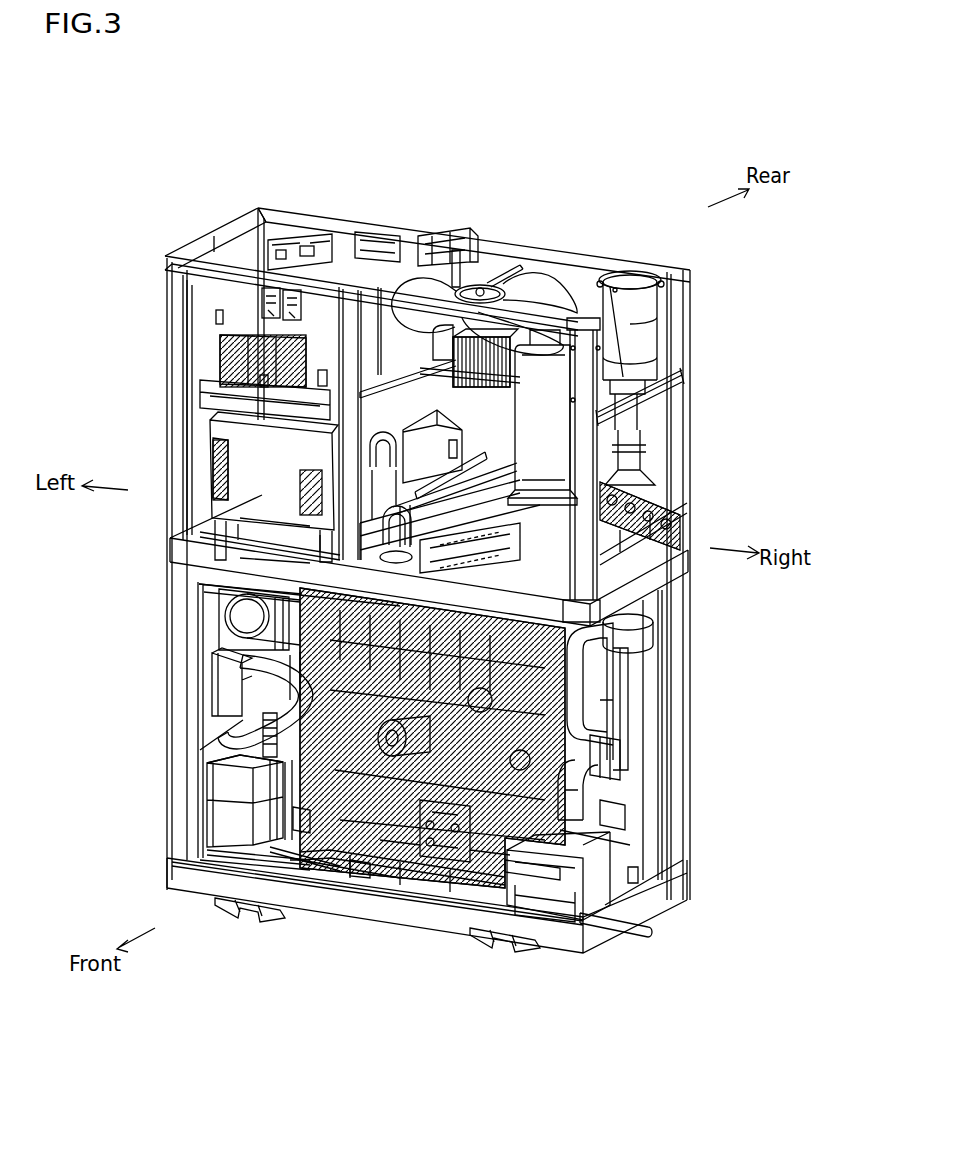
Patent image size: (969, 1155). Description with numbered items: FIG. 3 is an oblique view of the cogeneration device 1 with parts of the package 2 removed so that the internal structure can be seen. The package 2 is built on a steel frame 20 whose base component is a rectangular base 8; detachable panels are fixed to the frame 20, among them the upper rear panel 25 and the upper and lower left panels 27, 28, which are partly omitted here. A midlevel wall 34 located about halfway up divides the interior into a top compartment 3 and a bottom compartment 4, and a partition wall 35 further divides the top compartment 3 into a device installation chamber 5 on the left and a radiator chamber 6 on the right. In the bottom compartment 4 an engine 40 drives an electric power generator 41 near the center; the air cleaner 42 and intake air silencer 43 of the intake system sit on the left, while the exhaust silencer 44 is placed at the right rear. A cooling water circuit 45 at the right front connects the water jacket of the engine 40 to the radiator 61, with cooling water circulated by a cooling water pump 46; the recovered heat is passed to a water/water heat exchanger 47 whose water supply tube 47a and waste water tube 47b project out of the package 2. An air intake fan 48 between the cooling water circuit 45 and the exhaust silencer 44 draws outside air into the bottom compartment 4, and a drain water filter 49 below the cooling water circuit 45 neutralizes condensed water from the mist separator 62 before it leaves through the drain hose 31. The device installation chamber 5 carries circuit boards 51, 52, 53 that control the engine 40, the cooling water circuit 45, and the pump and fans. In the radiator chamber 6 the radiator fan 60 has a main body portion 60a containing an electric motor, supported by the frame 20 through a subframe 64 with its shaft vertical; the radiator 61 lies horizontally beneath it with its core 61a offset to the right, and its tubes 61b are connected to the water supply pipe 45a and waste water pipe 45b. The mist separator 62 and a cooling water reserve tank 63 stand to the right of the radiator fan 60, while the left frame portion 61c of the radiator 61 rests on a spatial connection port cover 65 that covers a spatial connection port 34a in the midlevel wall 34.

The engine generator unit 1 is at (588, 122).
The package 2 is at (185, 243).
The top compartment 3 is at (419, 202).
The bottom compartment 4 is at (212, 736).
The device installation chamber 5 is at (373, 240).
The radiator chamber 6 is at (483, 247).
The rectangular base 8 is at (315, 903).
The frame 20 is at (175, 368).
The upper rear panel 25 is at (590, 258).
The upper left panel 27 is at (216, 240).
The lower left panel 28 is at (215, 752).
The drain hose 31 is at (638, 937).
The midlevel wall 34 is at (232, 552).
The spatial connection port 34a is at (478, 566).
The partition wall 35 is at (372, 300).
The engine 40 is at (433, 803).
The electric power generator 41 is at (292, 770).
The air cleaner 42 is at (248, 620).
The intake air silencer 43 is at (230, 678).
The exhaust silencer 44 is at (650, 615).
The cooling water circuit 45 is at (620, 718).
The water supply pipe 45a is at (440, 438).
The waste water pipe 45b is at (217, 528).
The cooling water pump 46 is at (523, 878).
The water/water heat exchanger 47 is at (610, 667).
The water supply tube 47a is at (620, 745).
The waste water tube 47b is at (620, 823).
The air intake fan 48 is at (627, 773).
The drain water filter 49 is at (563, 893).
The circuit board 51 is at (213, 323).
The circuit board 52 is at (217, 435).
The circuit board 53 is at (268, 212).
The radiator fan 60 is at (507, 265).
The main body portion 60a is at (513, 363).
The radiator 61 is at (673, 503).
The core 61a is at (627, 560).
The tube 61b is at (668, 528).
The left frame portion 61c is at (487, 460).
The mist separator 62 is at (647, 325).
The cooling water reserve tank 63 is at (603, 457).
The subframe 64 is at (668, 402).
The spatial connection port cover 65 is at (443, 547).